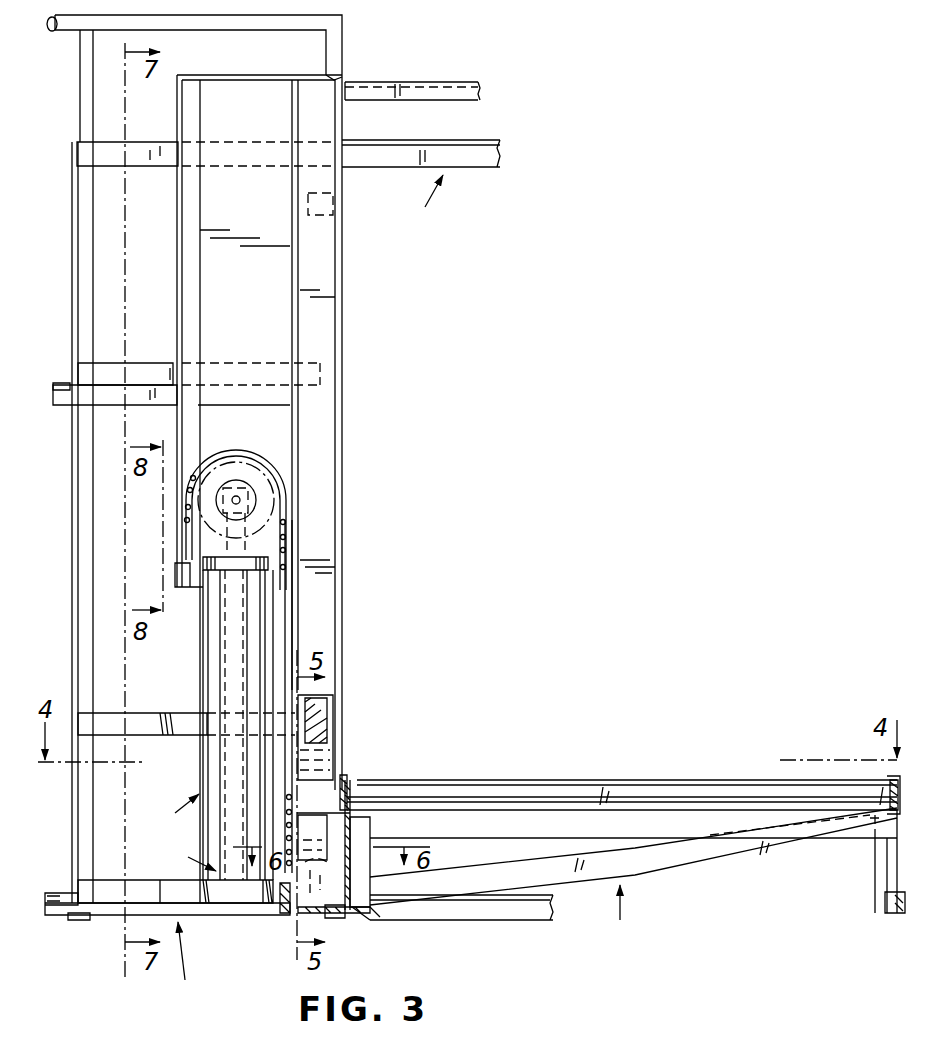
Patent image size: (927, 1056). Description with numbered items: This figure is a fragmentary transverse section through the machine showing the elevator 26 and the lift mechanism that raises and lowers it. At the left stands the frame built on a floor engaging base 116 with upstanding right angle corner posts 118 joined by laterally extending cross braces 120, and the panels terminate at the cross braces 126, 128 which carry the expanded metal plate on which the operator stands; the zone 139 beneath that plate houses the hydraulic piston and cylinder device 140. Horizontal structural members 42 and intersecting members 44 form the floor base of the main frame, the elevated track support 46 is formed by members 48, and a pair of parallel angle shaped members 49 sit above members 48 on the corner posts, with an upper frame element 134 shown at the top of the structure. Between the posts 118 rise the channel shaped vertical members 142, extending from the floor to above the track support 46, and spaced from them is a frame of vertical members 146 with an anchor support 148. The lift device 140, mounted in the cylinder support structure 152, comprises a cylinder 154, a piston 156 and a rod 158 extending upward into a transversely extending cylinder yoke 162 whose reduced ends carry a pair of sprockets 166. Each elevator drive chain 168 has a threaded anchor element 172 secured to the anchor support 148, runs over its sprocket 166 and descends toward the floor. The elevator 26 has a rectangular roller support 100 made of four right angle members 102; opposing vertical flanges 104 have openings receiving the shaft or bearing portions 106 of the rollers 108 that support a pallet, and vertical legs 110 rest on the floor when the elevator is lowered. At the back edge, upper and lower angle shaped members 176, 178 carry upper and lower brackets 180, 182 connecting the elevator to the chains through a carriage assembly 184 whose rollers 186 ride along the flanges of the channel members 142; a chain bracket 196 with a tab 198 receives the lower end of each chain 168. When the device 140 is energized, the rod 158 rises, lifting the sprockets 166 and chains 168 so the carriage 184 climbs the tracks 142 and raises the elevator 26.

The elevator 26 is at (633, 884).
The horizontally extending structural members 42 is at (518, 911).
The horizontally extending structural members 44 is at (897, 914).
The elevated track support 46 is at (424, 211).
The horizontally extending structural members 48 is at (450, 142).
The parallel angle shaped members 49 is at (398, 88).
The roller support 100 is at (687, 843).
The right angle members 102 is at (873, 806).
The vertical flanges 104 is at (343, 778).
The shaft or bearing portions 106 is at (890, 780).
The rollers 108 is at (583, 767).
The vertical legs 110 is at (880, 904).
The floor engaging base 116 is at (167, 955).
The corner posts 118 is at (72, 329).
The cross braces 120 is at (66, 397).
The cross brace 126 is at (108, 405).
The cross brace 128 is at (133, 362).
The top frame member 134 is at (233, 31).
The zone 139 is at (183, 685).
The hydraulic piston and cylinder device 140 is at (172, 816).
The channel shaped vertical members 142 is at (330, 428).
The vertical members 146 is at (201, 331).
The anchor support 148 is at (178, 589).
The cylinder support structure 152 is at (232, 896).
The cylinder 154 is at (207, 777).
The piston 156 is at (179, 860).
The rod 158 is at (237, 612).
The cylinder yoke 162 is at (258, 495).
The sprockets 166 is at (258, 440).
The elevator drive chains 168 is at (290, 535).
The threaded anchor element 172 is at (183, 547).
The upper horizontally extending angle shaped structural member 176 is at (367, 812).
The lower horizontally extending angle shaped structural member 178 is at (363, 918).
The upper bracket 180 is at (353, 801).
The lower bracket 182 is at (343, 908).
The carriage assembly 184 is at (333, 696).
The rollers 186 is at (333, 721).
The chain bracket 196 is at (348, 854).
The tab 198 is at (288, 871).